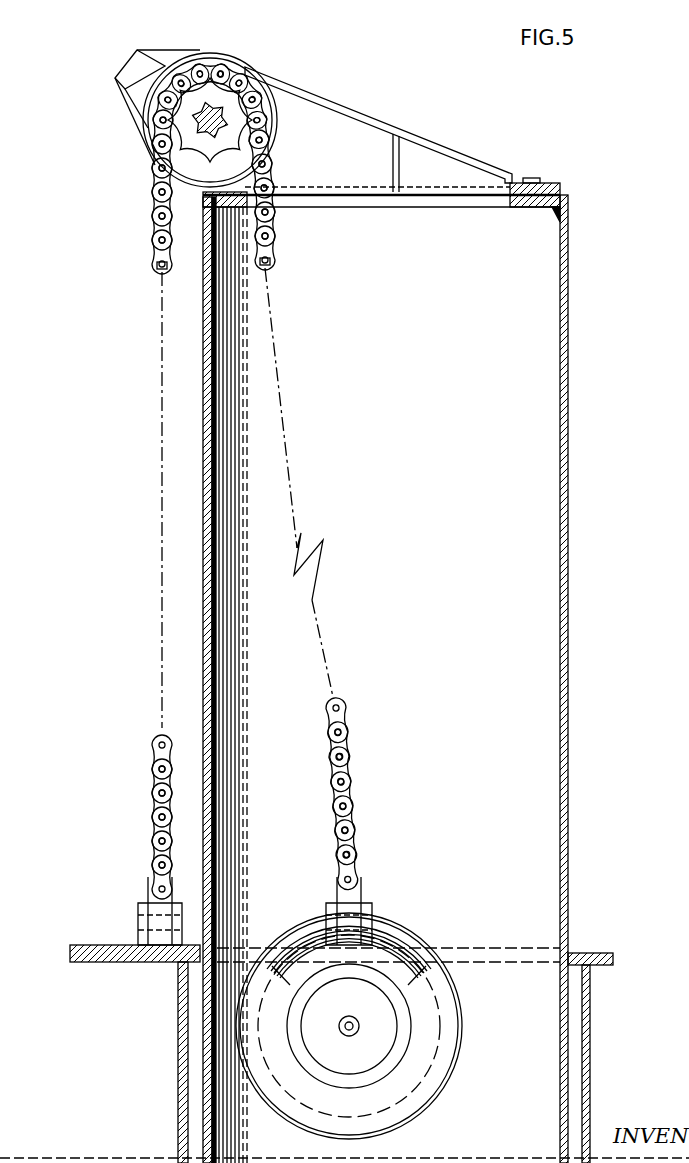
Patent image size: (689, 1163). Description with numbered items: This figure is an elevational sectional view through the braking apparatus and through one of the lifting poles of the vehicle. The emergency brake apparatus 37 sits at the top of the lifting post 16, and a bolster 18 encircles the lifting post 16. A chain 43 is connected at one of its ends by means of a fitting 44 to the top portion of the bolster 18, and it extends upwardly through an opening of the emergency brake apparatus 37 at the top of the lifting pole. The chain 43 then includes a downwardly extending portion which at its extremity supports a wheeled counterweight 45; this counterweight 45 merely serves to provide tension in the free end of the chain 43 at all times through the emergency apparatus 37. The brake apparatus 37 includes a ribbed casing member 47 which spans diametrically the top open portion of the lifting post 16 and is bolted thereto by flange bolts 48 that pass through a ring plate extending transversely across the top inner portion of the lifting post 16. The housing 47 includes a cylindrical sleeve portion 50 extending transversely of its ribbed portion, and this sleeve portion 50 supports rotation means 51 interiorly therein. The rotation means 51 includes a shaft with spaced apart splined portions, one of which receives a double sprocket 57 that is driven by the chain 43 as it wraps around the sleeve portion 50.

The lifting post 16 is at (568, 653).
The bolster 18 is at (62, 947).
The emergency brake apparatus 37 is at (277, 67).
The chain 43 is at (153, 247).
The fitting 44 is at (140, 910).
The wheeled counterweight 45 is at (383, 947).
The ribbed casing member 47 is at (360, 110).
The flange bolts 48 is at (543, 172).
The cylindrical sleeve portion 50 is at (205, 53).
The rotation means 51 is at (215, 110).
The double sprocket 57 is at (198, 153).